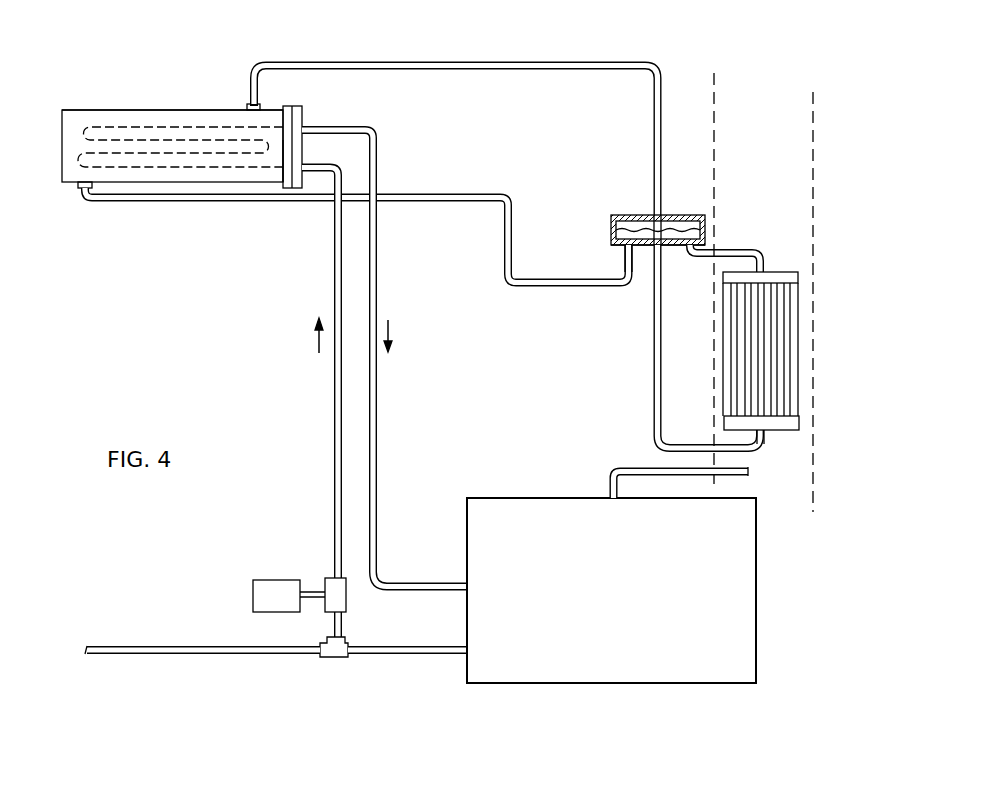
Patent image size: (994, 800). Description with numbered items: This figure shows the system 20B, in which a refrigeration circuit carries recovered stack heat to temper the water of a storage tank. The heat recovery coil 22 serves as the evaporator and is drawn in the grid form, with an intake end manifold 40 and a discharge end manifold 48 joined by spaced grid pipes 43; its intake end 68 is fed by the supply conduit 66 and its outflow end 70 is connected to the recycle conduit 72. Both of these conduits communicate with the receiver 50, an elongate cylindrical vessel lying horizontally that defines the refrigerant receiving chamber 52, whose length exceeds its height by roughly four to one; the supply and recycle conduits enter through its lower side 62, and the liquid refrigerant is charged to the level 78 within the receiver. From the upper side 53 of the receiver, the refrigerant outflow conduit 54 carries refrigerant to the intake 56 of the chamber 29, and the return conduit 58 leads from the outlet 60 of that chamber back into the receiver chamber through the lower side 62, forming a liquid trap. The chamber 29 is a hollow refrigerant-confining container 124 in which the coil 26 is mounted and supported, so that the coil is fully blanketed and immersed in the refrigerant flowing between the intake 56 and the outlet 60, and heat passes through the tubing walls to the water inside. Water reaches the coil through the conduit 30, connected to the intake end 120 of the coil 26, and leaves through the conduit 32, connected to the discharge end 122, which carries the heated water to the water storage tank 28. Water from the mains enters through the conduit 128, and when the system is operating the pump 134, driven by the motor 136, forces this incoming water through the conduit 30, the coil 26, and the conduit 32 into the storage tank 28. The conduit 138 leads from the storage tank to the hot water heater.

The chamber 29 is at (76, 110).
The container 124 is at (123, 110).
The coil 26 is at (177, 124).
The intake end 120 is at (292, 127).
The discharge end 122 is at (284, 190).
The intake 56 is at (249, 104).
The outlet 60 is at (80, 189).
The refrigerant outflow conduit 54 is at (571, 62).
The refrigerant receiving chamber 52 is at (672, 199).
The upper side 53 is at (703, 215).
The liquid level 78 is at (670, 230).
The receiver 50 is at (706, 212).
The supply conduit 66 is at (656, 358).
The return conduit 58 is at (190, 201).
The lower side 62 is at (635, 258).
The recycle conduit 72 is at (753, 252).
The heat recovery coil 22 is at (796, 292).
The discharge end manifold 48 is at (795, 346).
The outflow end 70 is at (766, 270).
The grid pipes 43 is at (783, 361).
The intake end manifold 40 is at (792, 430).
The intake end 68 is at (770, 432).
The system 20B is at (683, 112).
The conduit 32 is at (378, 404).
The conduit 30 is at (333, 410).
The pump 134 is at (341, 597).
The motor 136 is at (273, 585).
The conduit 128 is at (143, 646).
The water storage tank 28 is at (756, 612).
The conduit 138 is at (633, 467).